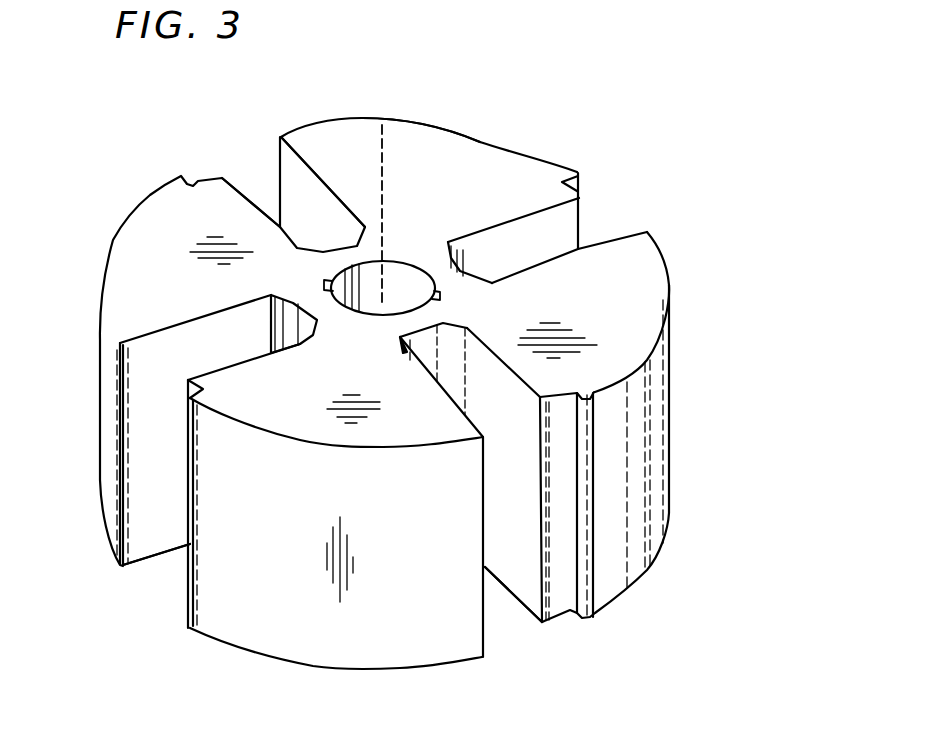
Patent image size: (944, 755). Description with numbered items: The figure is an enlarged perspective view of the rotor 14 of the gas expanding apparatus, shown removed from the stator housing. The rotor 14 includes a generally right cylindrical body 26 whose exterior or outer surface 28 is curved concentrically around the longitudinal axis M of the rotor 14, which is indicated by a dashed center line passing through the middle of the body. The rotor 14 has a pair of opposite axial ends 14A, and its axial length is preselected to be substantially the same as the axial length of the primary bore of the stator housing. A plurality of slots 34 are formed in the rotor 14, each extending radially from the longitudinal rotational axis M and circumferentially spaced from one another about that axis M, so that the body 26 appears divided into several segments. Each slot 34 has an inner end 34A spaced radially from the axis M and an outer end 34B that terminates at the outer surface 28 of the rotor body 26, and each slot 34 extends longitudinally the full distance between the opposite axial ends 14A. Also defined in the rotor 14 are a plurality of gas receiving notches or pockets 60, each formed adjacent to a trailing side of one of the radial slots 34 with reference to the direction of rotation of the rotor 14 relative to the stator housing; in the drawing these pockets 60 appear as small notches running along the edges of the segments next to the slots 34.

The rotor 14 is at (579, 137).
The opposite axial ends 14A is at (143, 227).
The right cylindrical body 26 is at (440, 133).
The outer surface 28 is at (362, 122).
The slots 34 is at (253, 152).
The inner ends 34A is at (335, 250).
The outer ends 34B is at (273, 155).
The gas receiving notches or pockets 60 is at (207, 177).
The longitudinal axis M is at (383, 176).